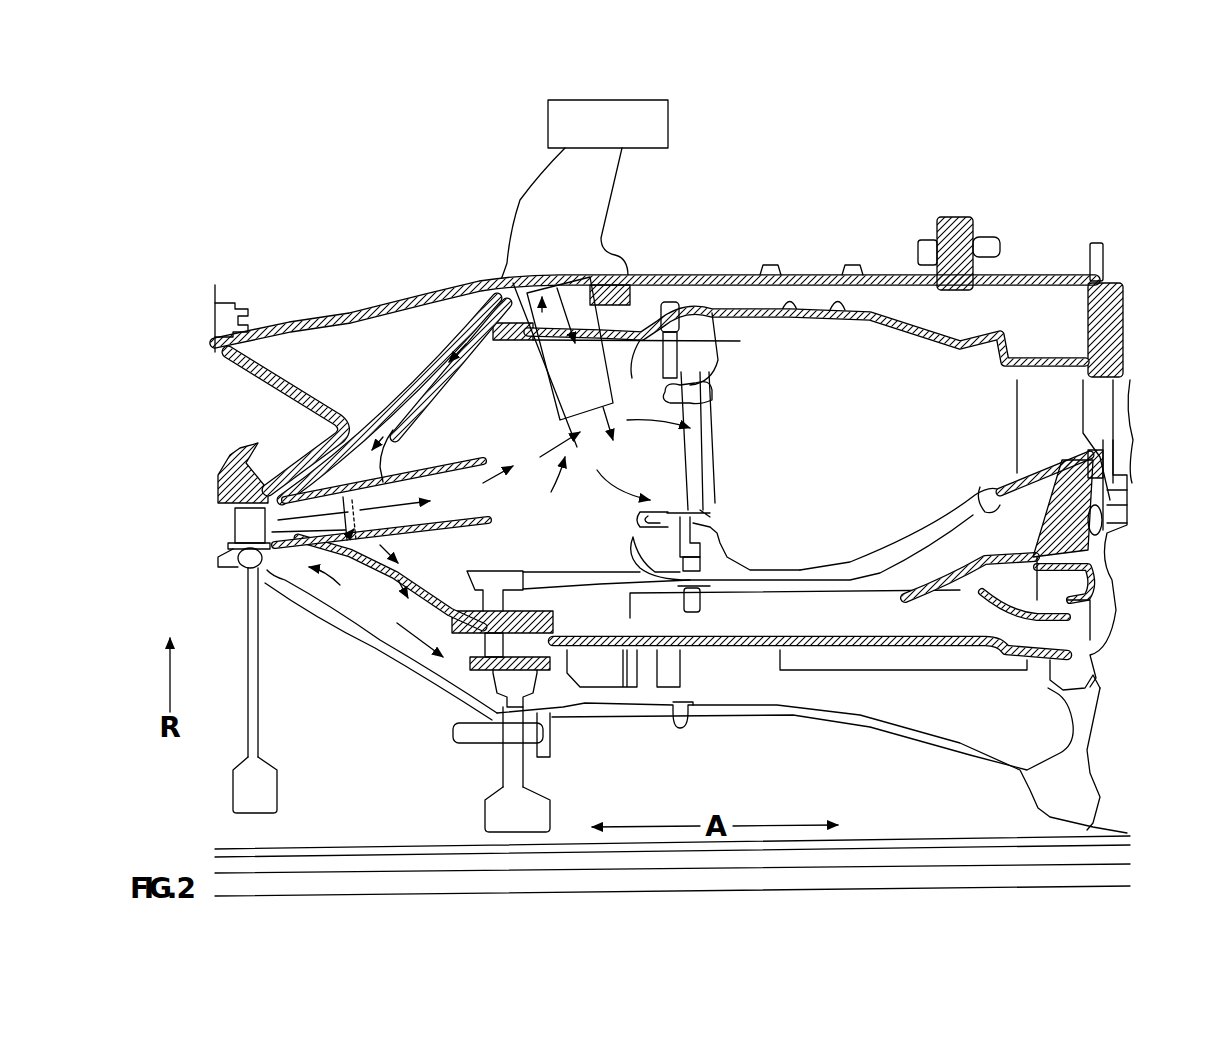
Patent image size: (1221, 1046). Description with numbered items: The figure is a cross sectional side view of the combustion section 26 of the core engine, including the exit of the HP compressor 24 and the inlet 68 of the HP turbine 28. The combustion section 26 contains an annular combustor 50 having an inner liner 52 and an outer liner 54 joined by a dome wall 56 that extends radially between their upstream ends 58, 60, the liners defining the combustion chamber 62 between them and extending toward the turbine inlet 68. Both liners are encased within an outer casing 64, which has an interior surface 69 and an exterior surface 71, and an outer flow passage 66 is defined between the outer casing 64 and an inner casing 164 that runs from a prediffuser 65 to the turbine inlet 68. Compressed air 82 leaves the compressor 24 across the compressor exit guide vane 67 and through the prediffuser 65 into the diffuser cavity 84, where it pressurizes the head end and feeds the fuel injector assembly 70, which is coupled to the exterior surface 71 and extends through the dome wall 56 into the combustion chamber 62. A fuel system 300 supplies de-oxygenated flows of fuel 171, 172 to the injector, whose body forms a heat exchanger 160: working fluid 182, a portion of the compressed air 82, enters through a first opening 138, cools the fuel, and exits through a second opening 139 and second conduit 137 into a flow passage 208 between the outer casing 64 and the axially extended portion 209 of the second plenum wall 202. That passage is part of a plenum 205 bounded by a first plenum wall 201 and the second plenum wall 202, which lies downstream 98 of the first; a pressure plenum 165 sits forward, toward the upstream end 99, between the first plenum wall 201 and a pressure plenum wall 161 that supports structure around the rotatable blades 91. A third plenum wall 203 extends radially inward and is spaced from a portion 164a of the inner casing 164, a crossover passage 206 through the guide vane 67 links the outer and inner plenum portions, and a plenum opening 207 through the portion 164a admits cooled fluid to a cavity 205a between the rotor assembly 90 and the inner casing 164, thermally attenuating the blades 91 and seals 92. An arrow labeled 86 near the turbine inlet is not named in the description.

The HP compressor 24 is at (285, 670).
The combustion section 26 is at (815, 150).
The HP turbine 28 is at (1020, 725).
The combustor 50 is at (914, 316).
The inner liner 52 is at (855, 560).
The outer liner 54 is at (785, 322).
The dome wall 56 is at (730, 512).
The upstream end 58 is at (721, 598).
The upstream end 60 is at (691, 298).
The combustion chamber 62 is at (827, 452).
The outer casing 64 is at (814, 248).
The prediffuser 65 is at (478, 540).
The outer flow passage 66 is at (734, 312).
The compressor exit guide vane (CEGV) 67 is at (310, 490).
The turbine inlet 68 is at (1041, 432).
The interior surface 69 is at (878, 298).
The fuel injector assembly 70 is at (629, 476).
The exterior surface 71 is at (790, 264).
The compressed air 82 is at (384, 465).
The diffuser cavity 84 is at (497, 511).
The core flow 86 is at (992, 430).
The rotor assembly 90 is at (722, 724).
The rotatable blades 91 is at (233, 530).
The seals 92 is at (470, 685).
The downstream 98 is at (1161, 434).
The upstream end 99 is at (121, 541).
The second conduit 137 is at (507, 263).
The first opening 138 is at (572, 464).
The second opening 139 is at (511, 289).
The heat exchanger 160 is at (565, 399).
The pressure plenum wall 161 is at (284, 365).
The inner casing 164 is at (430, 565).
The portion of the inner casing 164a is at (322, 578).
The pressure plenum 165 is at (378, 352).
The flow of fuel 171 is at (567, 323).
The flow of fuel 172 is at (540, 382).
The working fluid 182 is at (388, 440).
The first plenum wall 201 is at (393, 408).
The second plenum wall 202 is at (491, 453).
The third plenum wall 203 is at (483, 537).
The plenum 205 is at (423, 407).
The cavity 205a is at (347, 617).
The crossover passage 206 is at (248, 570).
The plenum opening 207 is at (403, 602).
The flow passage 208 is at (505, 312).
The axially extended portion 209 is at (508, 347).
The fuel system 300 is at (591, 138).